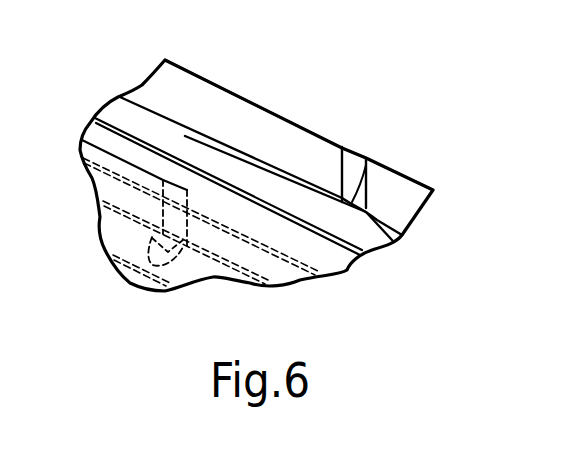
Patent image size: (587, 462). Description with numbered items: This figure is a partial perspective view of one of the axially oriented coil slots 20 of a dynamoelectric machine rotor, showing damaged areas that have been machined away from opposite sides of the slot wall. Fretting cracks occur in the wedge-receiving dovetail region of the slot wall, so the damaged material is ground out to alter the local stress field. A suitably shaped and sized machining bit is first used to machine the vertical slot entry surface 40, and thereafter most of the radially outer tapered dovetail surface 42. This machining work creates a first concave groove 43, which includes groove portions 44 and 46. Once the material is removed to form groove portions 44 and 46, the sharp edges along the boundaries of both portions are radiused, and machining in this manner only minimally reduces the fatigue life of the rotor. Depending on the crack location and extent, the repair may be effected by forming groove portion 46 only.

The coil slot 20 is at (172, 106).
The vertical slot entry surface 40 is at (230, 112).
The radially outer tapered dovetail surface 42 is at (258, 156).
The first concave groove 43 is at (331, 188).
The groove portion 44 is at (360, 168).
The groove portion 46 is at (350, 190).